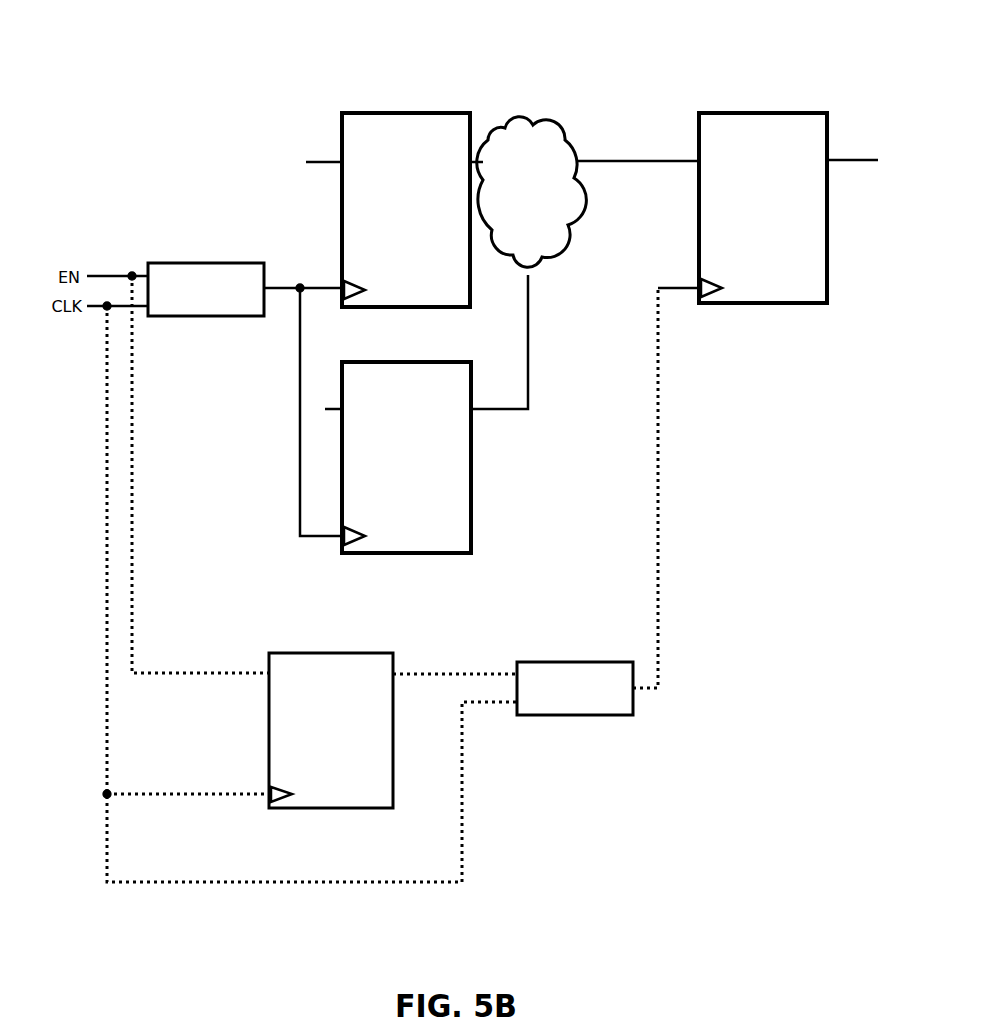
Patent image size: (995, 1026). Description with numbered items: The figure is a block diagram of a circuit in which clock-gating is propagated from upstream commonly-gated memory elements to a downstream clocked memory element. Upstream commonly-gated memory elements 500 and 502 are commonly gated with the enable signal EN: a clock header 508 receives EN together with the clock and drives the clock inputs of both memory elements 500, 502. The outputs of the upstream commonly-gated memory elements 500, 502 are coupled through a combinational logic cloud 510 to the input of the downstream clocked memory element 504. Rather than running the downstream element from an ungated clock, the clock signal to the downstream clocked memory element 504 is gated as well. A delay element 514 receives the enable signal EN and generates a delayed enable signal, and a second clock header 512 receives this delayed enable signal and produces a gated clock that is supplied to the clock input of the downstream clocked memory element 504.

The upstream commonly-gated memory element 500 is at (406, 210).
The upstream commonly-gated memory element 502 is at (406, 457).
The downstream clocked memory element 504 is at (763, 208).
The clock header 508 is at (206, 289).
The combinational logic cloud 510 is at (522, 108).
The clock header 512 is at (575, 688).
The delay element 514 is at (331, 730).